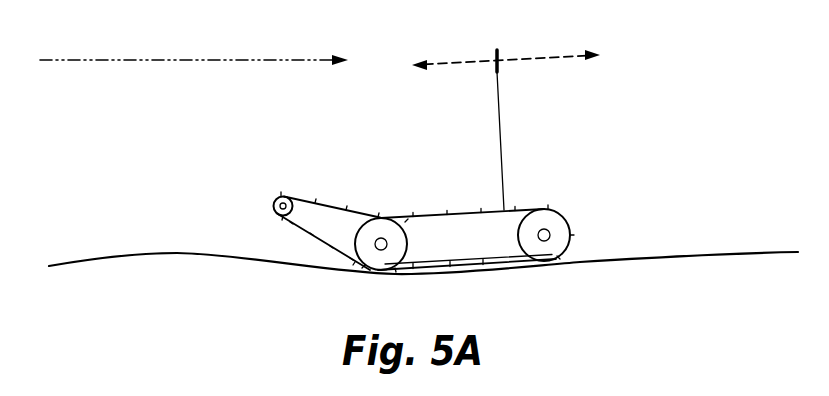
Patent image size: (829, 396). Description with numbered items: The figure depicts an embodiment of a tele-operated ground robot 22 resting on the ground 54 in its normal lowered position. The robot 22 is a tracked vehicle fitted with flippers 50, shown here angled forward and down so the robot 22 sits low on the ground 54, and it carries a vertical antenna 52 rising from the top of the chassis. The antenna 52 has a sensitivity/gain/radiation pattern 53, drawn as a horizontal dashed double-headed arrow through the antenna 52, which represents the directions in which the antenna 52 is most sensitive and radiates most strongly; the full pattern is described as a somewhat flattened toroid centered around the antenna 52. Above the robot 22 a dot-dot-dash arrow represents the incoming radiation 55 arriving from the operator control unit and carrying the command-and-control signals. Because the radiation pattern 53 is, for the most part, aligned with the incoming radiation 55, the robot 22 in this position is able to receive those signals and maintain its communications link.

The robot 22 is at (470, 212).
The flippers 50 is at (302, 200).
The antenna 52 is at (498, 52).
The radiation pattern 53 is at (555, 61).
The ground 54 is at (163, 252).
The incoming radiation 55 is at (248, 60).